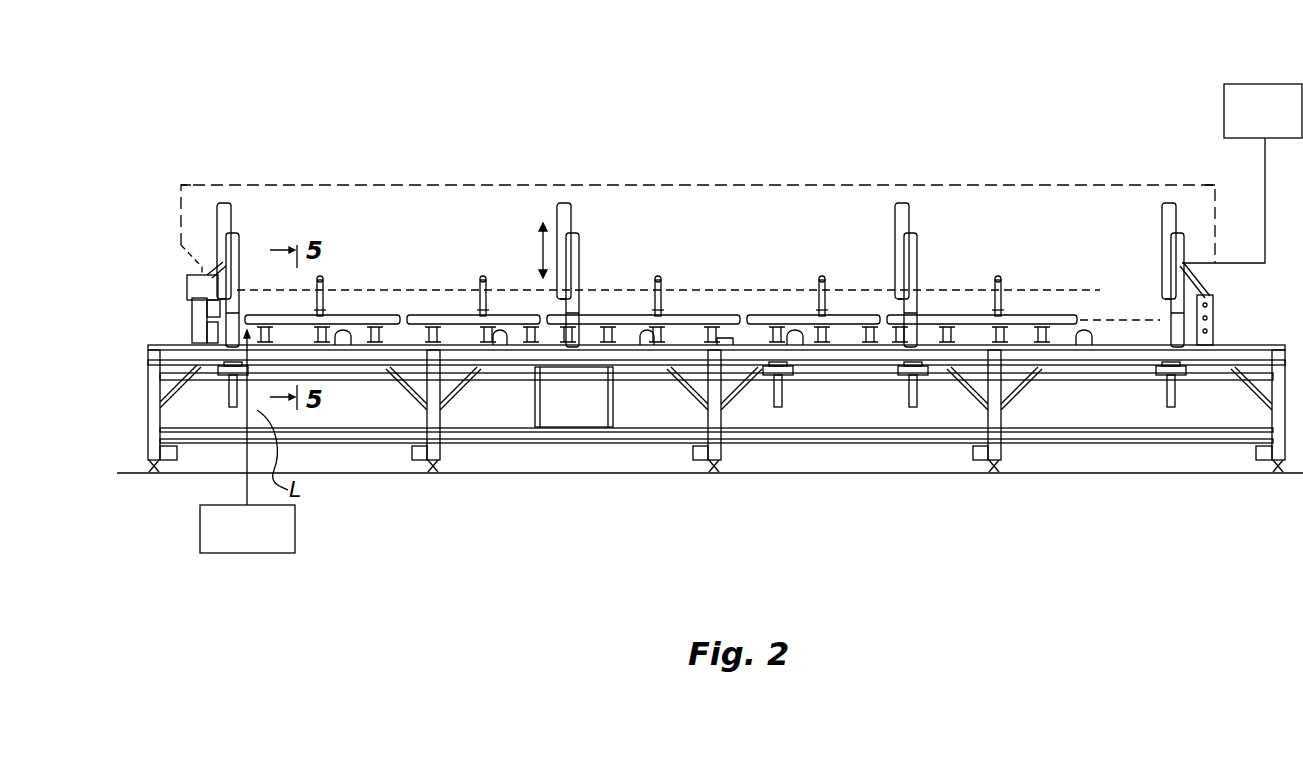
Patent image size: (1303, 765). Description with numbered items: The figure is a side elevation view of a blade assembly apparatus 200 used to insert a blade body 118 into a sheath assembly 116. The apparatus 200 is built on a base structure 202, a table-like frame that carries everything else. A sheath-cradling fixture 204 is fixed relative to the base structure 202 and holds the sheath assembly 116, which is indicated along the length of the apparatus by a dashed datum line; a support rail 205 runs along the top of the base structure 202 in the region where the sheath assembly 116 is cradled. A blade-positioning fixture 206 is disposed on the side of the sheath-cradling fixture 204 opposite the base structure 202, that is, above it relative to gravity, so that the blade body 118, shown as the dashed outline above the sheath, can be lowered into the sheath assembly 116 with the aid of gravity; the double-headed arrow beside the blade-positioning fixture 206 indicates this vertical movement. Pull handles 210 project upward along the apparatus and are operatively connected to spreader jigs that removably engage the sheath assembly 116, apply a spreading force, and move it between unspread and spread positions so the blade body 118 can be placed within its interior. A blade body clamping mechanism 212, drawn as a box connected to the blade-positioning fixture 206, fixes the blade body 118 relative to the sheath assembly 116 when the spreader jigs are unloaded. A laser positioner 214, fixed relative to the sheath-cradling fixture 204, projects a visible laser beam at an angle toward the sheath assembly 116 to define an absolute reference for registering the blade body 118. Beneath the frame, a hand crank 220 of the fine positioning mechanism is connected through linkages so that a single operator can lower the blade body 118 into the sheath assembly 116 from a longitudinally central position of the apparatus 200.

The blade assembly apparatus 200 is at (351, 132).
The base structure 202 is at (141, 427).
The sheath-cradling fixture 204 is at (213, 328).
The support rail 205 is at (373, 315).
The blade-positioning fixture 206 is at (586, 238).
The pull handle 210 is at (480, 305).
The blade body clamping mechanism 212 is at (1284, 125).
The laser positioner 214 is at (268, 542).
The hand crank 220 is at (797, 420).
The sheath assembly 116 is at (1100, 290).
The blade body 118 is at (1108, 185).